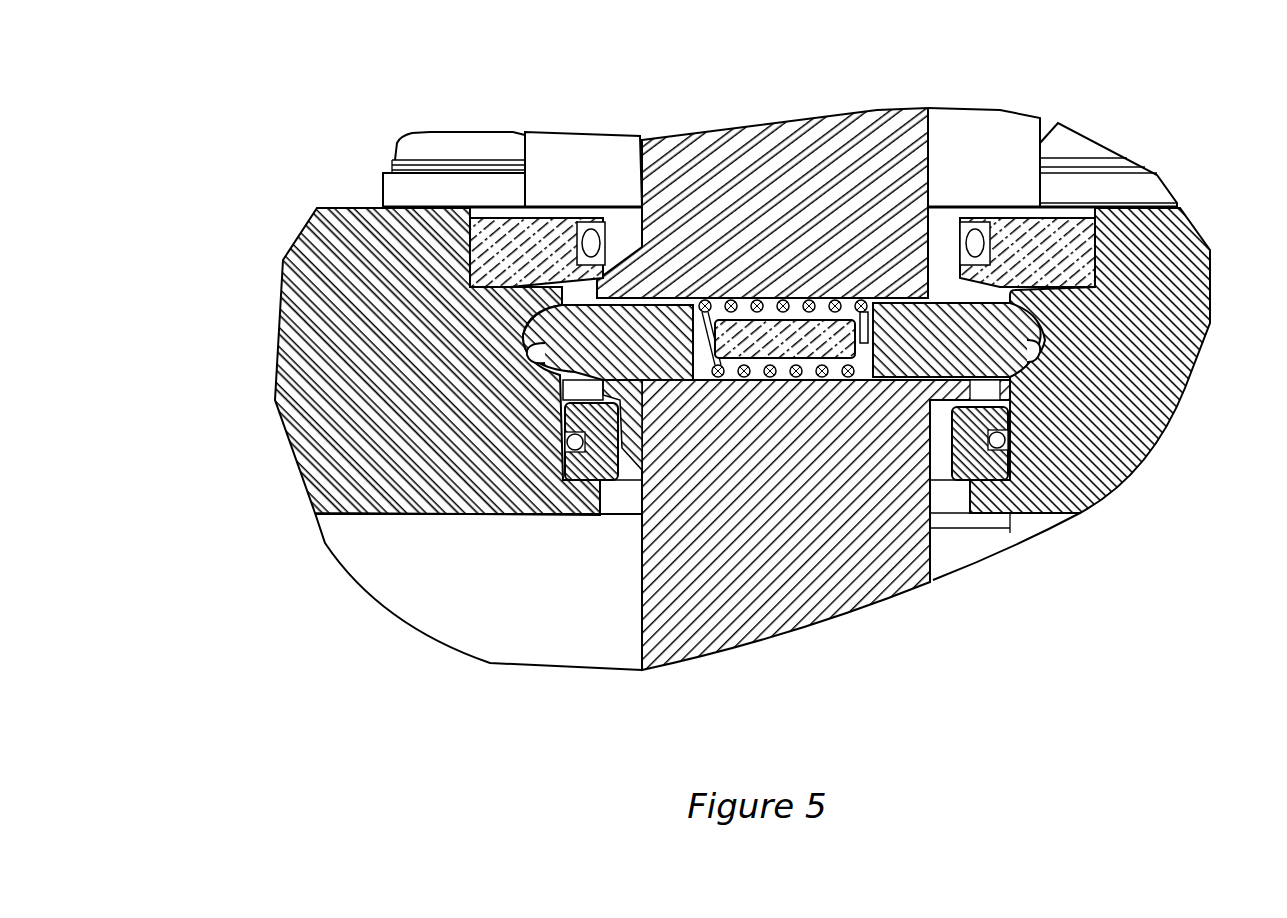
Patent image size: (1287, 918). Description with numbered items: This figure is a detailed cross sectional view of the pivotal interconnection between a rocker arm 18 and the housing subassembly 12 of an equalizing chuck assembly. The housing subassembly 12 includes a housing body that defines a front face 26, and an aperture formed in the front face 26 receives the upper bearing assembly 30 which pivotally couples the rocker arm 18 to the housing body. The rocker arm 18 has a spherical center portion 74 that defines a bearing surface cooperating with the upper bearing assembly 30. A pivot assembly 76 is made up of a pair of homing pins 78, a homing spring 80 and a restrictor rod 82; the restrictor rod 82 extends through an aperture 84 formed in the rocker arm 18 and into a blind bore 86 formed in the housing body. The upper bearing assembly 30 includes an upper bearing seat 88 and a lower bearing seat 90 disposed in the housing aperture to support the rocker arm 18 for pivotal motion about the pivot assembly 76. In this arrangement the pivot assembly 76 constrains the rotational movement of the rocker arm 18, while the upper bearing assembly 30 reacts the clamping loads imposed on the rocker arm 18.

The housing subassembly 12 is at (291, 227).
The rocker arm 18 is at (710, 165).
The front face 26 is at (405, 507).
The upper bearing assembly 30 is at (623, 540).
The spherical center portion 74 is at (620, 425).
The pivot assembly 76 is at (858, 420).
The homing pins 78 is at (637, 327).
The homing spring 80 is at (865, 300).
The restrictor rod 82 is at (817, 333).
The aperture 84 is at (915, 322).
The blind bore 86 is at (546, 355).
The upper bearing seat 88 is at (987, 482).
The lower bearing seat 90 is at (510, 232).